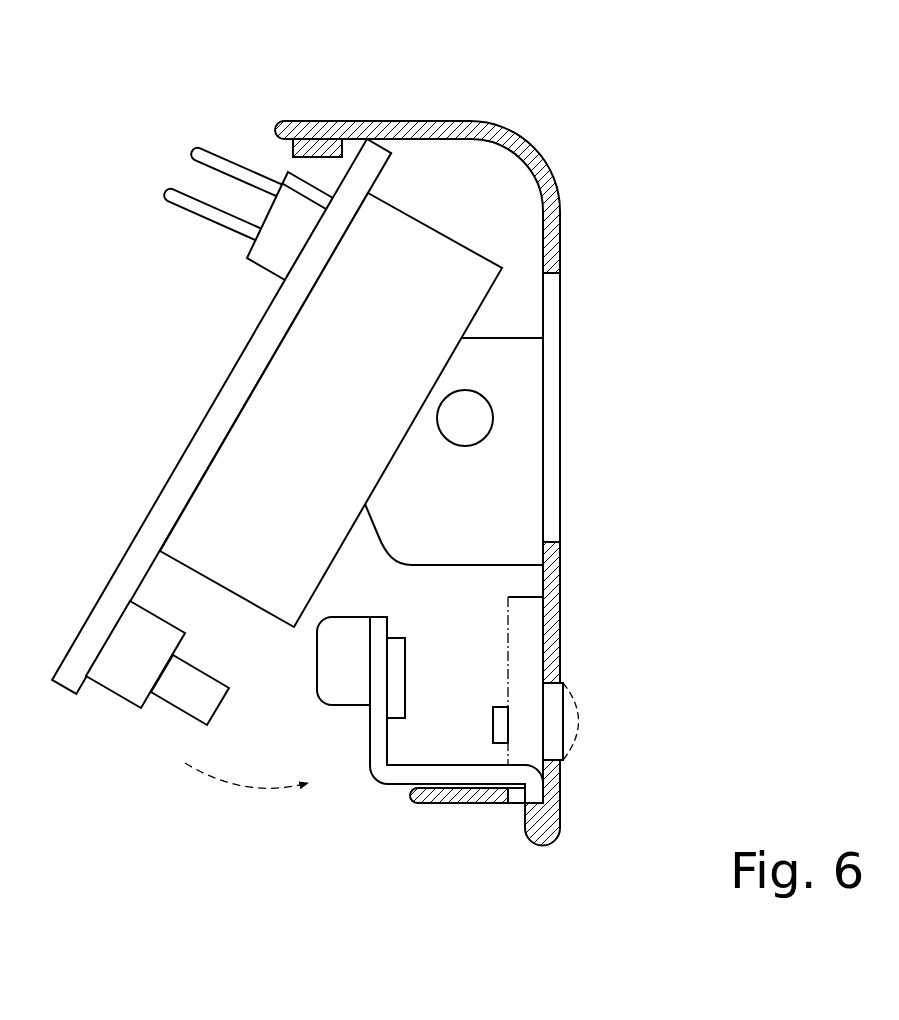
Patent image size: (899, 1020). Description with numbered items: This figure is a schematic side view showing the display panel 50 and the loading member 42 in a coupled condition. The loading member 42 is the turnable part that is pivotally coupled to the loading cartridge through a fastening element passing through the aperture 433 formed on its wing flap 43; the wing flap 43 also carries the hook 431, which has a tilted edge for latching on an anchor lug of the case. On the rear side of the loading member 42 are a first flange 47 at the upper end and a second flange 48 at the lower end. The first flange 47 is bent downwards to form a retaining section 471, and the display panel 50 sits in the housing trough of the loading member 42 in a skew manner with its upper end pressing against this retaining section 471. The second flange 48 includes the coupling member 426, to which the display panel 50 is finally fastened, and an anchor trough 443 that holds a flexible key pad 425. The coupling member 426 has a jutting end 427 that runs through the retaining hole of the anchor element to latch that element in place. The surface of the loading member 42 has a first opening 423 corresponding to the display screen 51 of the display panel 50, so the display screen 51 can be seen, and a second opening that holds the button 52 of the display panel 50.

The loading member 42 is at (488, 456).
The first flange 47 is at (386, 120).
The retaining section 471 is at (313, 152).
The first opening 423 is at (562, 446).
The anchor trough 443 is at (536, 754).
The second flange 48 is at (455, 798).
The wing flap 43 is at (459, 594).
The aperture 433 is at (492, 402).
The flexible key pad 425 is at (508, 675).
The coupling member 426 is at (378, 718).
The jutting end 427 is at (340, 655).
The display panel 50 is at (277, 446).
The hook 431 is at (283, 183).
The display screen 51 is at (270, 427).
The button 52 is at (198, 692).